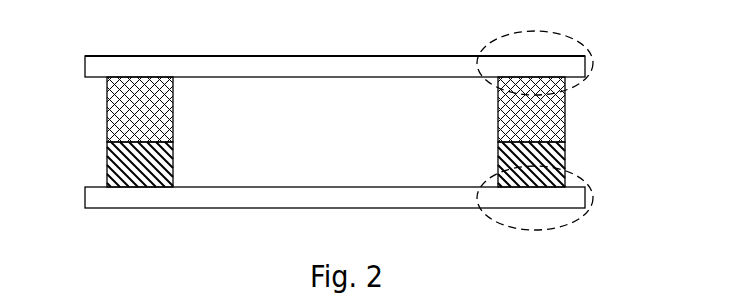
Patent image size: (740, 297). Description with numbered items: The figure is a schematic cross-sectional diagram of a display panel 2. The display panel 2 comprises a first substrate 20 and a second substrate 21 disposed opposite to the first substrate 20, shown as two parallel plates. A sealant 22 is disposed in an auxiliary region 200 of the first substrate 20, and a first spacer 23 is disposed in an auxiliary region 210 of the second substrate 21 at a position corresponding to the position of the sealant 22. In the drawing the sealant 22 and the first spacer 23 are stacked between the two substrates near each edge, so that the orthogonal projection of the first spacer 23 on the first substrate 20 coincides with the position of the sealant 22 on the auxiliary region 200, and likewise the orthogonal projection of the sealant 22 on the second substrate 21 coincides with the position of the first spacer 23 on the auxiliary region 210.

The display panel 2 is at (60, 38).
The first substrate 20 is at (568, 67).
The auxiliary region of the first substrate 200 is at (580, 42).
The second substrate 21 is at (568, 195).
The auxiliary region of the second substrate 210 is at (580, 218).
The sealant 22 is at (540, 120).
The first spacer 23 is at (540, 156).